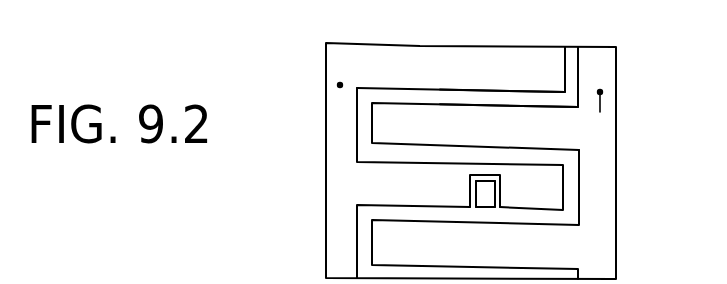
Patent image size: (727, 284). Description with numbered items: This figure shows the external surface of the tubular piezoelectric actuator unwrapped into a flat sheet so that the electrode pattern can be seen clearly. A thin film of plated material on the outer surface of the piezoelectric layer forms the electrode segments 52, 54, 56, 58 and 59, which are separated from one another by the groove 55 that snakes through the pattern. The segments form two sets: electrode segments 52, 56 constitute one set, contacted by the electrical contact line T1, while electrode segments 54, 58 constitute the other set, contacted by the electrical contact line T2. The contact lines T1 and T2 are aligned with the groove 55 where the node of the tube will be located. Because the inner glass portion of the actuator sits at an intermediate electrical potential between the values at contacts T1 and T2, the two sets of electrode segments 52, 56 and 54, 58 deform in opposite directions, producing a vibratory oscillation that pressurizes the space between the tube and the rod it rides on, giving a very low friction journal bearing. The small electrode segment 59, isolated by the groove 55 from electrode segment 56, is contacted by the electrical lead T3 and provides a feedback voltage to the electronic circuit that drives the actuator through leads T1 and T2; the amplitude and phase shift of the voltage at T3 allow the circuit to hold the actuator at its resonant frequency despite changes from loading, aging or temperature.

The electrode segment 52 is at (456, 78).
The electrode segment 54 is at (424, 139).
The groove 55 is at (487, 93).
The electrode segment 56 is at (433, 199).
The electrode segment 58 is at (443, 259).
The electrode segment 59 is at (497, 195).
The electrical contact line T1 is at (343, 82).
The electrical contact line T2 is at (600, 92).
The electrical lead T3 is at (487, 207).